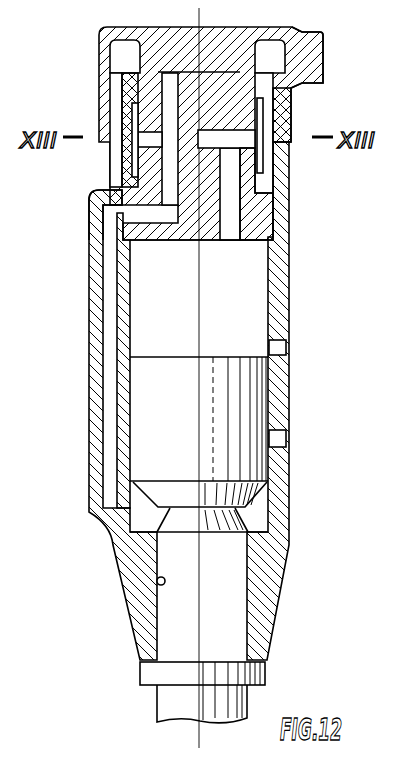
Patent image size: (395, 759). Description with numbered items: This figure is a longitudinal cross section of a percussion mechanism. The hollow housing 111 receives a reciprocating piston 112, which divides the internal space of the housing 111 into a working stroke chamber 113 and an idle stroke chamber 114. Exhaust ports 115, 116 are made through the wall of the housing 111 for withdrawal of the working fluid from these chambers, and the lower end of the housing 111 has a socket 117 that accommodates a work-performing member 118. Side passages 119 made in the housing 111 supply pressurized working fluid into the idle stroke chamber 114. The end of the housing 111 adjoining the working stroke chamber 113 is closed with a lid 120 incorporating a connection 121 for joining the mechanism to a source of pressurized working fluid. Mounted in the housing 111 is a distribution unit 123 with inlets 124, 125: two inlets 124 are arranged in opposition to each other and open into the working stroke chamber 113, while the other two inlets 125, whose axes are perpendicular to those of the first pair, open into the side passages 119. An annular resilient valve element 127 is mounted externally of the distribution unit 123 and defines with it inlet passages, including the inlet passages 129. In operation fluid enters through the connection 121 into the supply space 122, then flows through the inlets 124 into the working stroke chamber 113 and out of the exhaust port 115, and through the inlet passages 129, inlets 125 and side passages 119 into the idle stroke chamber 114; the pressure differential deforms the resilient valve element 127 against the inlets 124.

The hollow housing 111 is at (107, 525).
The reciprocating piston 112 is at (143, 377).
The working stroke chamber 113 is at (137, 258).
The idle stroke chamber 114 is at (140, 497).
The exhaust port 115 is at (282, 347).
The exhaust port 116 is at (283, 438).
The socket 117 is at (158, 582).
The work-performing member 118 is at (168, 627).
The side passages 119 is at (110, 222).
The lid 120 is at (100, 32).
The connection 121 is at (325, 32).
The supply space 122 is at (118, 58).
The distribution unit 123 is at (258, 220).
The inlets 124 is at (248, 139).
The inlets 125 is at (148, 139).
The annular resilient valve element 127 is at (262, 163).
The inlet passages 129 is at (137, 105).